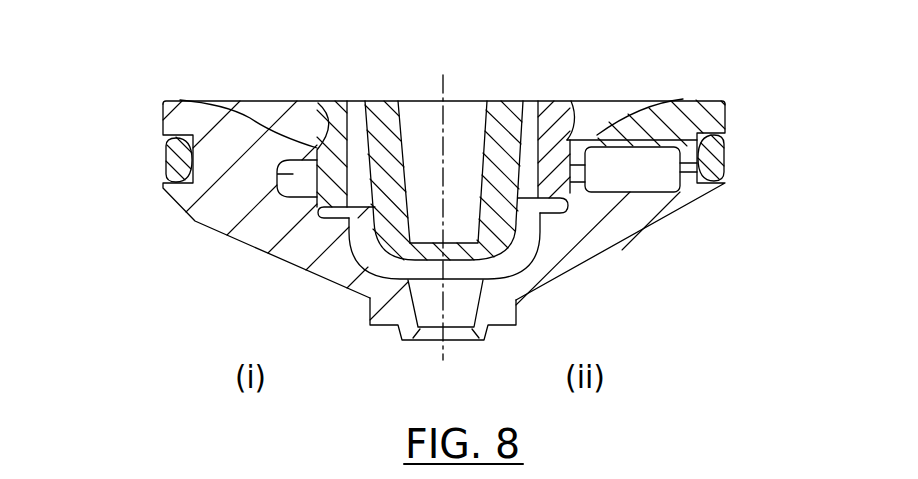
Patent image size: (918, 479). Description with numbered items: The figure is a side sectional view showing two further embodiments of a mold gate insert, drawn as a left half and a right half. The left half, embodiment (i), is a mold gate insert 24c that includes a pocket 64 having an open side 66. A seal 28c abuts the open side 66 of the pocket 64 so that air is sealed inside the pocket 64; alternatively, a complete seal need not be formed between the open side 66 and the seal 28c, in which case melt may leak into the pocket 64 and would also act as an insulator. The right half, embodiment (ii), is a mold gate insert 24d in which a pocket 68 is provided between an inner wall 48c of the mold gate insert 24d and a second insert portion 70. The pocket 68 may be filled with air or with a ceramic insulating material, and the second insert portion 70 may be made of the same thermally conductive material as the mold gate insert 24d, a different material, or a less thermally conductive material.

The mold gate insert 24c is at (85, 131).
The mold gate insert 24d is at (790, 92).
The open side 66 is at (322, 101).
The second insert portion 70 is at (702, 101).
The pocket 64 is at (195, 209).
The pocket 68 is at (658, 172).
The inner wall 48c is at (660, 170).
The seal 28c is at (338, 222).